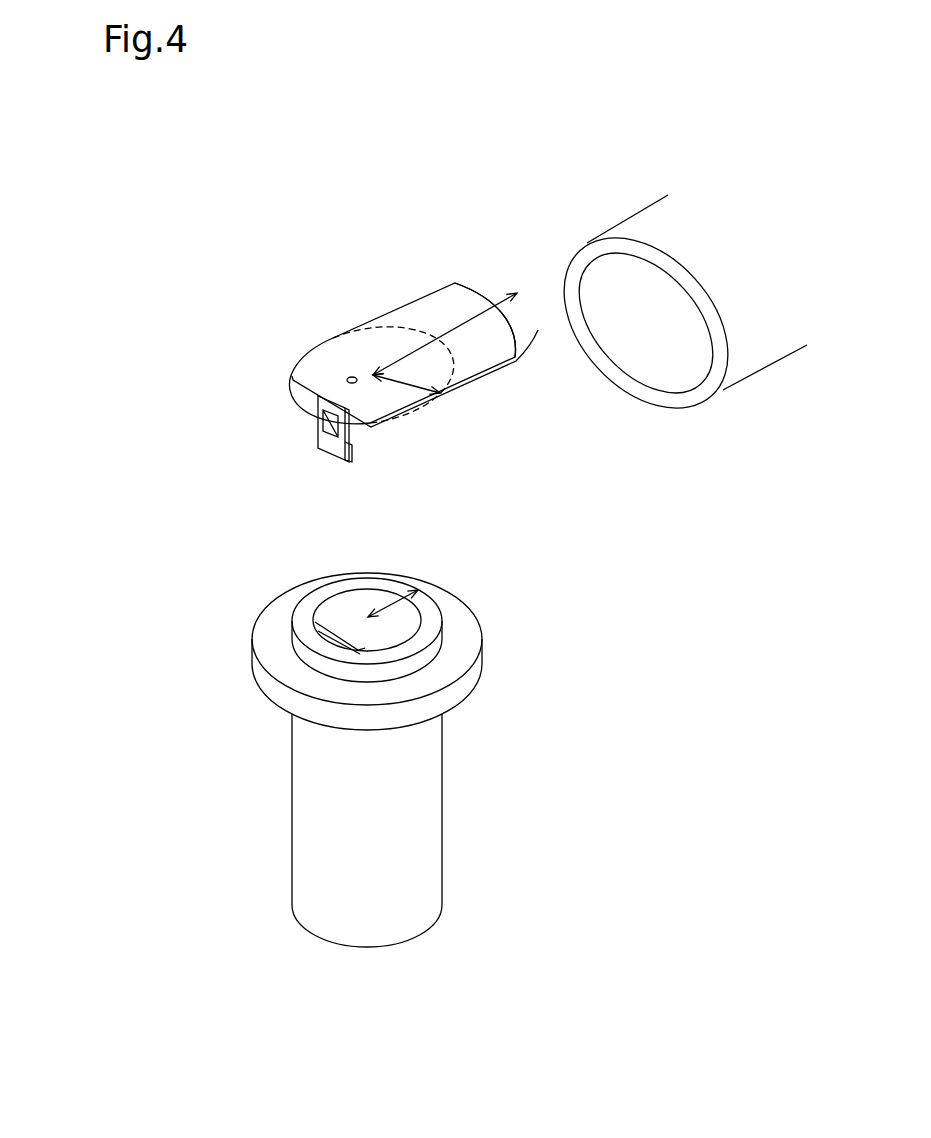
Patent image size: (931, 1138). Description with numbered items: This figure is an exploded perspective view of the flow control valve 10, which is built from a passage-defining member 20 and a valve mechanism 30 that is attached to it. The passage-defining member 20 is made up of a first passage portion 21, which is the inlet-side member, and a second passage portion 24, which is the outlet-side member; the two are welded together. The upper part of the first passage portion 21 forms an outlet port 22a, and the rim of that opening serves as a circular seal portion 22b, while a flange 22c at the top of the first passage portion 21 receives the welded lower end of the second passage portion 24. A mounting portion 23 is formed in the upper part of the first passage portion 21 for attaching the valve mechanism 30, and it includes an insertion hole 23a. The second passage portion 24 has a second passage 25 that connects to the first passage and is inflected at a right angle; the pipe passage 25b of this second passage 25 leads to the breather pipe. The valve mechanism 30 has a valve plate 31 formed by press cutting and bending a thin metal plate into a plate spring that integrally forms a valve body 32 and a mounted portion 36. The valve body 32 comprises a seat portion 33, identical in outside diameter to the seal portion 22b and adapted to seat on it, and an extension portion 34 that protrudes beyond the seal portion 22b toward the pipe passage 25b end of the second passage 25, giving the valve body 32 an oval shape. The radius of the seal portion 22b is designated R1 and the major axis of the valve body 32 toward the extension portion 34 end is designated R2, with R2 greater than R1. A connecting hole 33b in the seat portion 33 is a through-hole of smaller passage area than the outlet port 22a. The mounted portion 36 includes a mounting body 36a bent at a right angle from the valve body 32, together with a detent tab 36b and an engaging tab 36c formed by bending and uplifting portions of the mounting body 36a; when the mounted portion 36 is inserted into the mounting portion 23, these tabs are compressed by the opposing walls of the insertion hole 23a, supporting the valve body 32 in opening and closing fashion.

The flow control valve 10 is at (122, 160).
The passage-defining member 20 is at (245, 552).
The first passage portion 21 is at (292, 778).
The outlet port 22a is at (352, 600).
The seal portion 22b is at (432, 617).
The flange 22c is at (465, 633).
The mounting portion 23 is at (340, 643).
The insertion hole 23a is at (317, 622).
The second passage portion 24 is at (630, 215).
The second passage 25 is at (645, 323).
The pipe passage 25b is at (682, 330).
The valve mechanism 30 is at (265, 233).
The valve plate 31 is at (410, 417).
The valve body 32 is at (458, 235).
The seat portion 33 is at (365, 337).
The connecting hole 33b is at (347, 377).
The extension portion 34 is at (440, 292).
The mounted portion 36 is at (217, 368).
The mounting body 36a is at (325, 405).
The detent tab 36b is at (350, 460).
The engaging tab 36c is at (330, 430).
The radius of the seal portion R1 is at (505, 368).
The major axis of the valve body R2 is at (461, 322).